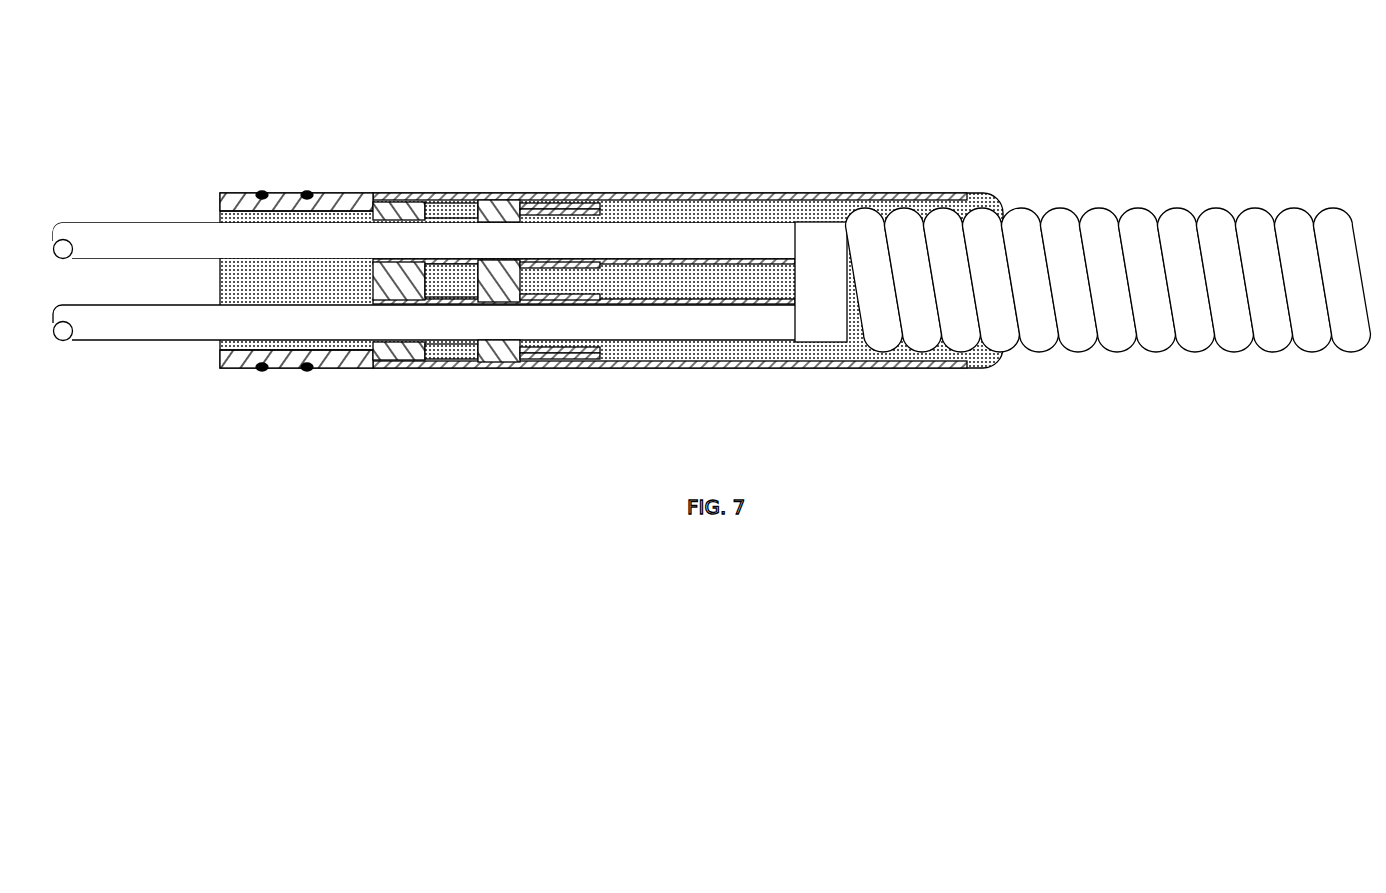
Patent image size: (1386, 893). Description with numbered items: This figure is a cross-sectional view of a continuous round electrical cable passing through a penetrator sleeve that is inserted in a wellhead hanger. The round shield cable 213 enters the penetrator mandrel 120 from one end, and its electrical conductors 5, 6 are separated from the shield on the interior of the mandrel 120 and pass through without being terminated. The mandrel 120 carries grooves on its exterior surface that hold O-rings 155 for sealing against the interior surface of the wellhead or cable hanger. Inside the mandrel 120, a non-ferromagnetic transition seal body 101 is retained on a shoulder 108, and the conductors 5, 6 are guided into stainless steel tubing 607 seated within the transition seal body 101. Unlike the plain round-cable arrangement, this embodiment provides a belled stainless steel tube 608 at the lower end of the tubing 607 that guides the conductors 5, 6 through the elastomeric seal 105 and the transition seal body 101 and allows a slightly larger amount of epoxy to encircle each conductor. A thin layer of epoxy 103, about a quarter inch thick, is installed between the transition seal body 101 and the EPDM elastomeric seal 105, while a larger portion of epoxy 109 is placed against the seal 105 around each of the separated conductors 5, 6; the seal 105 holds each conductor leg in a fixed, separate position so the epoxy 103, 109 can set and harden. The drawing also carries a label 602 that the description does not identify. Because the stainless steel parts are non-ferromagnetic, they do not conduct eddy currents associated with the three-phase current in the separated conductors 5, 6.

The electrical conductor 5 is at (93, 223).
The electrical conductor 6 is at (112, 342).
The O-rings 155 is at (307, 195).
The penetrator mandrel 120 is at (352, 193).
The epoxy 103 is at (450, 282).
The stainless steel tubing 607 is at (595, 205).
The belled stainless steel tube 608 is at (680, 205).
The retainer block 602 is at (820, 203).
The round shield cable 213 is at (1100, 232).
The shoulder 108 is at (362, 367).
The transition seal body 101 is at (405, 368).
The elastomeric seal 105 is at (517, 365).
The epoxy 109 is at (745, 355).